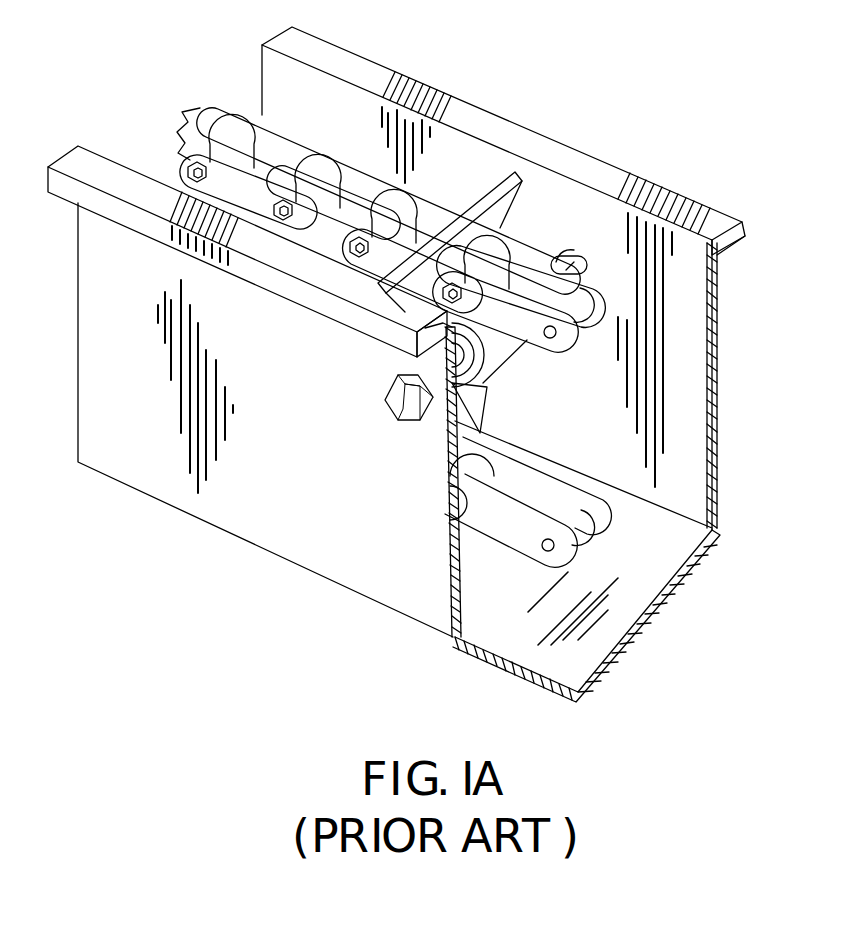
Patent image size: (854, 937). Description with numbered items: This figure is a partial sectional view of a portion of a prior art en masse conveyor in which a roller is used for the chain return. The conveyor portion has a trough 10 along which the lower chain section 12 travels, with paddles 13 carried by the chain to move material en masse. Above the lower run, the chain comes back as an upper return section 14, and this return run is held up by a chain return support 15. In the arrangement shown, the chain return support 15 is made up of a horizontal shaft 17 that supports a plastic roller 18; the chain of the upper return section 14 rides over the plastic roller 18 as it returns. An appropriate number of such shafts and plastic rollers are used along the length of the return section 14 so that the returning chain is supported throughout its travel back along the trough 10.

The trough 10 is at (412, 585).
The lower chain section 12 is at (520, 538).
The paddles 13 is at (512, 192).
The upper return section 14 is at (287, 157).
The chain return support 15 is at (553, 262).
The horizontal shaft 17 is at (572, 257).
The plastic roller 18 is at (500, 352).